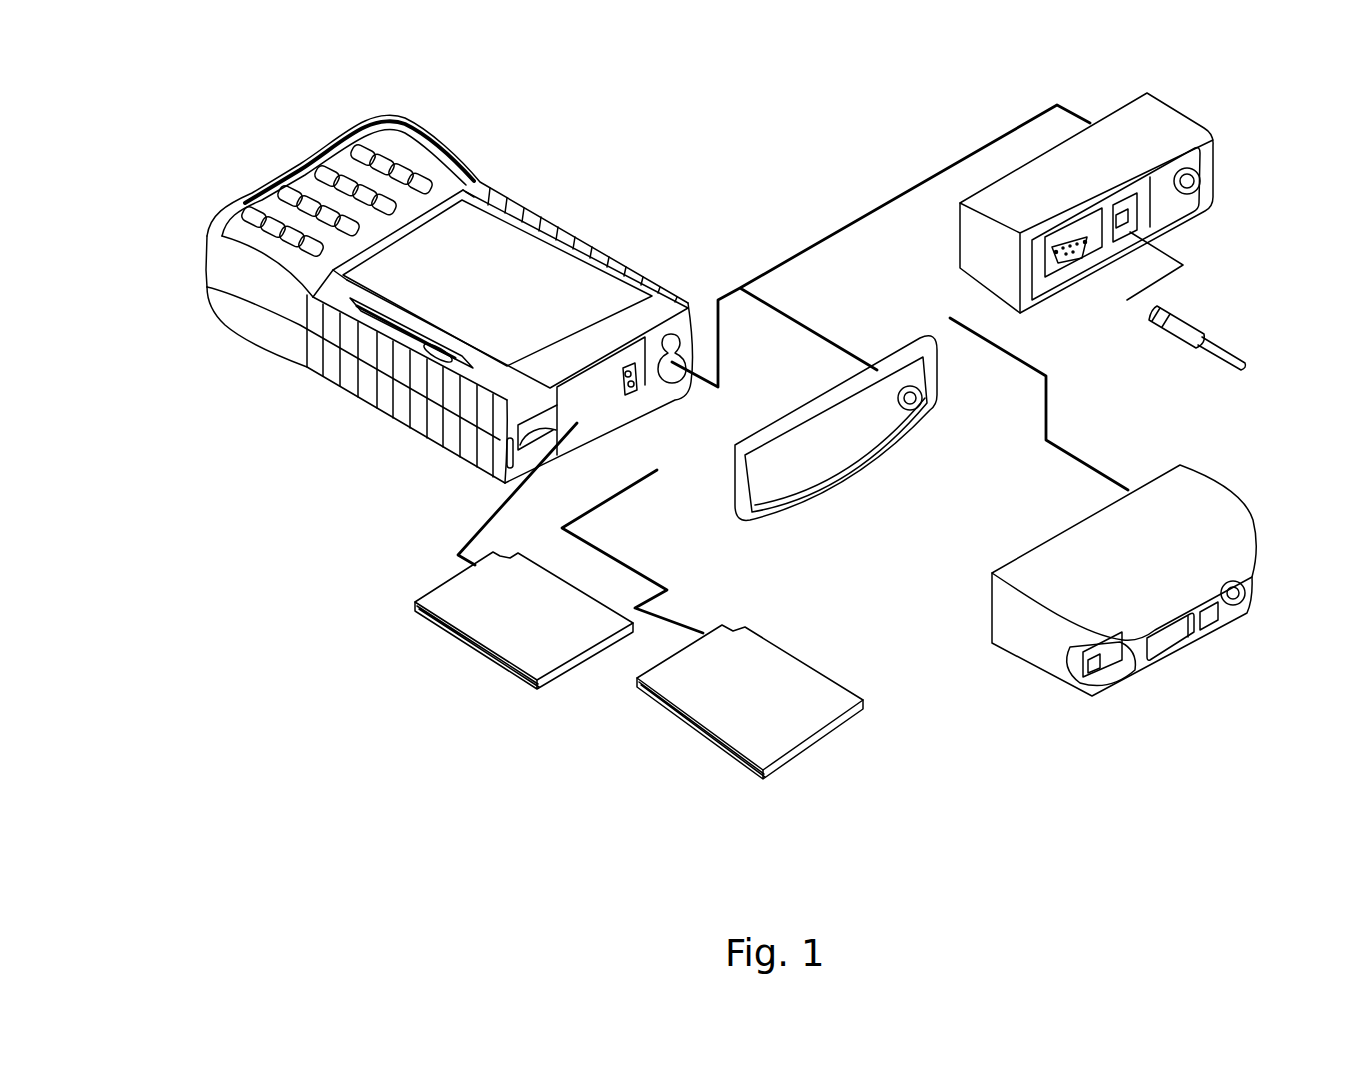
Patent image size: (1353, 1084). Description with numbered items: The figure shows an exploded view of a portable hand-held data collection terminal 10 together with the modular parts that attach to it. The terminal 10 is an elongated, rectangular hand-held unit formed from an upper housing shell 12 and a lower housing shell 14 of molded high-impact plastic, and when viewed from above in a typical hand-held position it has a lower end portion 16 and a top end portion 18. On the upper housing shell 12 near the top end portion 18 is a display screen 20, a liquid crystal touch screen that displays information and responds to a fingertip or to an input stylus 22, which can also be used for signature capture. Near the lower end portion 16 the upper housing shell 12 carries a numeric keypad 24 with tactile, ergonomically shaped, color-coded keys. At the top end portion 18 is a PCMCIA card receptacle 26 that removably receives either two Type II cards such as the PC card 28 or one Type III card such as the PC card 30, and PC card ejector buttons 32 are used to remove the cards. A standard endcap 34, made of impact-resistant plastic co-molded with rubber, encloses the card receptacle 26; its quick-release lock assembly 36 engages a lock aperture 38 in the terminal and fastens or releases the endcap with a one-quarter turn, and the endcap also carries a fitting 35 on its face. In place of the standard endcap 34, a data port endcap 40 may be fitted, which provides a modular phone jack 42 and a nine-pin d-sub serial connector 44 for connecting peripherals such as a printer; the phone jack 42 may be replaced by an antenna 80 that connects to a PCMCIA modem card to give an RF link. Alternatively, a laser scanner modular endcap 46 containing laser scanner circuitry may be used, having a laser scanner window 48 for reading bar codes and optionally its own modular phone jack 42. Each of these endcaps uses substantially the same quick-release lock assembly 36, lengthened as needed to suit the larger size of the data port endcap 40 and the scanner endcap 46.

The portable data terminal 10 is at (566, 203).
The upper housing shell 12 is at (207, 268).
The lower housing shell 14 is at (222, 318).
The lower end portion 16 is at (316, 149).
The top end portion 18 is at (694, 306).
The display screen 20 is at (580, 265).
The input stylus 22 is at (408, 350).
The keypad 24 is at (275, 180).
The PCMCIA card receptacle 26 is at (540, 430).
The PC card 28 is at (447, 633).
The PC card 30 is at (657, 712).
The PC card ejector buttons 32 is at (634, 390).
The standard endcap 34 is at (817, 485).
The power jack 35 is at (919, 406).
The quick-release lock assembly 36 is at (1201, 173).
The lock aperture 38 is at (680, 382).
The data port endcap 40 is at (1106, 282).
The RJ-11 modular phone jack 42 is at (1137, 226).
The 9-pin d-sub serial connector 44 is at (1073, 255).
The laser scanner modular endcap 46 is at (1045, 547).
The laser scanner window 48 is at (1165, 651).
The antenna 80 is at (1208, 358).